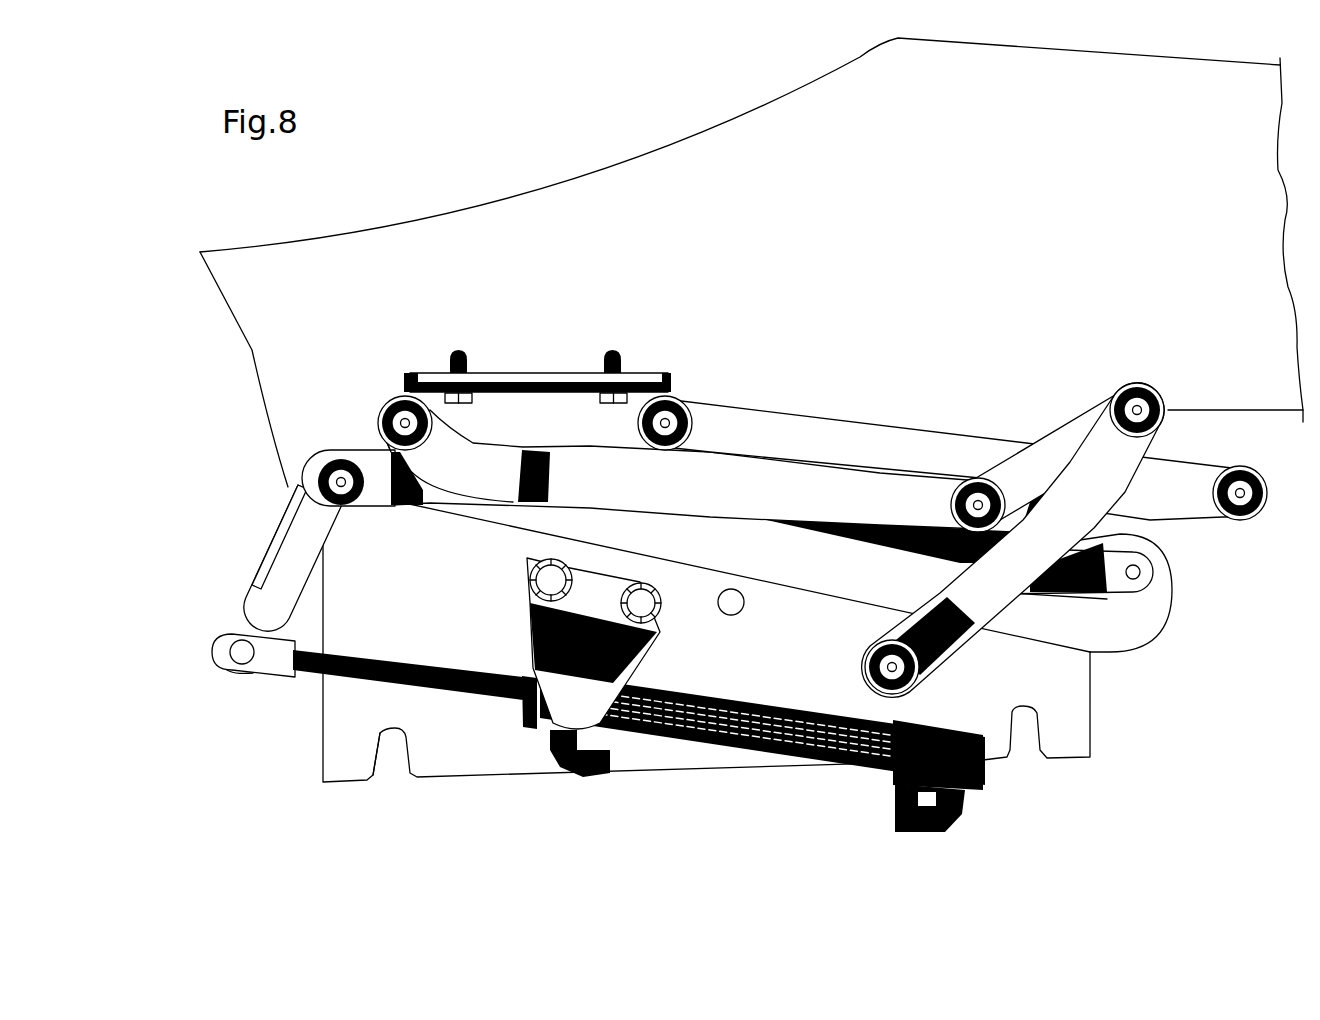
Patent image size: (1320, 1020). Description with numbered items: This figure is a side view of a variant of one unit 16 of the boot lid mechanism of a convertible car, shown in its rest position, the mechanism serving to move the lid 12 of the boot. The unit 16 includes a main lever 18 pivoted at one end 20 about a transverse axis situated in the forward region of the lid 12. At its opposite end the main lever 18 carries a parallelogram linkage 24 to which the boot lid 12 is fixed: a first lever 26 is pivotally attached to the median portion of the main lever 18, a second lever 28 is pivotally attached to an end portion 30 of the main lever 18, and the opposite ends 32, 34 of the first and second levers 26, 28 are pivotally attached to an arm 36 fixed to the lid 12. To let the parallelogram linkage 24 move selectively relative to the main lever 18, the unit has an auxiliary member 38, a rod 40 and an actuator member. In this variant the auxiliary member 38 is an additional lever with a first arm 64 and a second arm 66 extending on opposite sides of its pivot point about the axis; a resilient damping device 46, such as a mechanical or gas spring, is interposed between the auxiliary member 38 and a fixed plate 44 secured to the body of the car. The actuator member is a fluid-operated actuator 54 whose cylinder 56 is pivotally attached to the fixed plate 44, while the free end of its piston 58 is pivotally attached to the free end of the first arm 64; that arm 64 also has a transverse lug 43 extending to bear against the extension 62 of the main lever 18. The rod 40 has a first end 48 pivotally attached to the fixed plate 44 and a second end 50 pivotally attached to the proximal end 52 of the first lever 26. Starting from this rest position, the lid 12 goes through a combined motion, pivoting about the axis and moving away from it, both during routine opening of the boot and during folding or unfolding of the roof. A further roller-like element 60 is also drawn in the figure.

The lid 12 is at (1277, 405).
The unit 16 is at (1100, 774).
The main lever 18 is at (458, 514).
The end of the main lever 20 is at (318, 477).
The parallelogram linkage 24 is at (674, 386).
The first lever 26 is at (740, 452).
The second lever 28 is at (904, 416).
The end portion of the main lever 30 is at (1193, 463).
The opposite end of the first lever 32 is at (397, 398).
The opposite end of the second lever 34 is at (683, 402).
The arm 36 is at (549, 387).
The auxiliary member 38 is at (226, 612).
The rod 40 is at (983, 643).
The transverse lug 43 is at (246, 573).
The fixed plate 44 is at (498, 786).
The resilient damping device 46 is at (1127, 533).
The first end of the rod 48 is at (920, 673).
The second end of the rod 50 is at (1150, 430).
The proximal end of the first lever 52 is at (1102, 407).
The fluid-operated actuator 54 is at (727, 758).
The cylinder 56 is at (878, 775).
The piston 58 is at (373, 782).
The roller 60 is at (980, 503).
The extension of the lever 62 is at (302, 570).
The first arm 64 is at (227, 623).
The second arm 66 is at (807, 584).